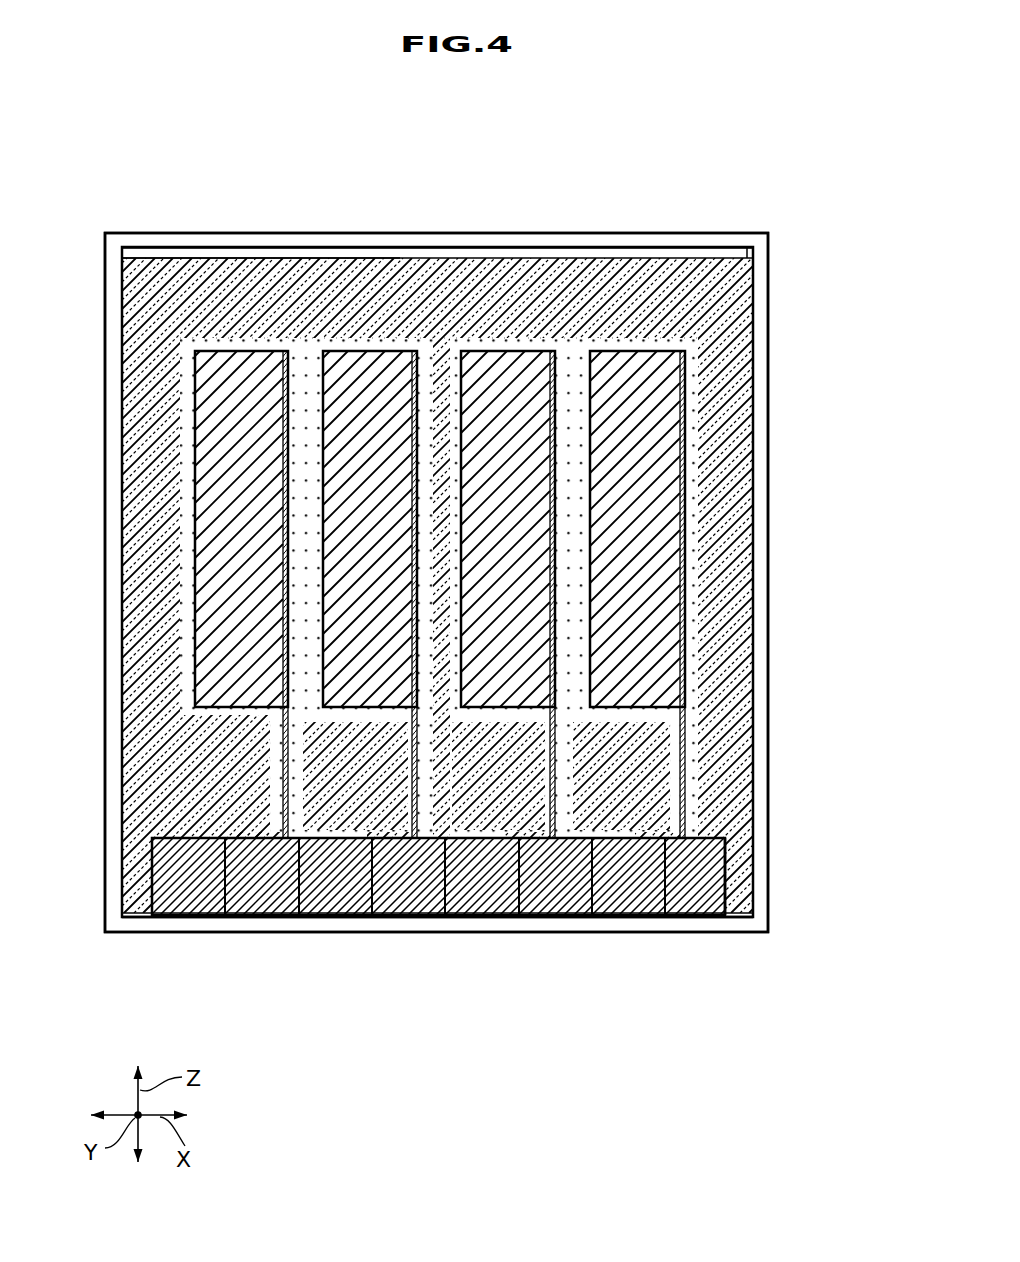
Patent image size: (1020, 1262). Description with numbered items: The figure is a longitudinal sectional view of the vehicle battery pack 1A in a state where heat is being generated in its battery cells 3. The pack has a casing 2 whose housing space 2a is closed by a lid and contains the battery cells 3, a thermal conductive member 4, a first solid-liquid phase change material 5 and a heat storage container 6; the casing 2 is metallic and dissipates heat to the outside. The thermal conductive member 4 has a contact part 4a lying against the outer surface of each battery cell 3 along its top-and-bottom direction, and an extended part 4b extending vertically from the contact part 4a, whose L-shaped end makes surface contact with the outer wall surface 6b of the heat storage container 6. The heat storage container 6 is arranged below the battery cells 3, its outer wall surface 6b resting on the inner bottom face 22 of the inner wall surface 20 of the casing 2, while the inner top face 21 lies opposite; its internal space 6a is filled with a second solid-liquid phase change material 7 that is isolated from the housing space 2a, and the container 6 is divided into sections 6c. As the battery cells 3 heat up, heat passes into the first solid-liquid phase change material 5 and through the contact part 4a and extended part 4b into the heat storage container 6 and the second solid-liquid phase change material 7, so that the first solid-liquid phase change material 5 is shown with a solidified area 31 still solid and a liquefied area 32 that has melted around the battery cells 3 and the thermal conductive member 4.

The vehicle battery pack 1A is at (574, 146).
The casing 2 is at (713, 227).
The housing space 2a is at (735, 327).
The battery cell 3 is at (232, 347).
The thermal conductive member 4 is at (407, 480).
The contact part 4a is at (447, 641).
The extended part 4b is at (408, 798).
The first solid-liquid phase change material 5 is at (758, 430).
The heat storage container 6 is at (731, 851).
The internal space 6a is at (608, 916).
The outer wall surface 6b is at (733, 851).
The electrode connecting portion 6c is at (572, 898).
The second solid-liquid phase change material 7 is at (460, 922).
The inner wall surface 20 is at (503, 536).
The inner top face 21 is at (754, 264).
The inner bottom face 22 is at (740, 914).
The solidified area 31 is at (146, 286).
The liquefied area 32 is at (318, 343).